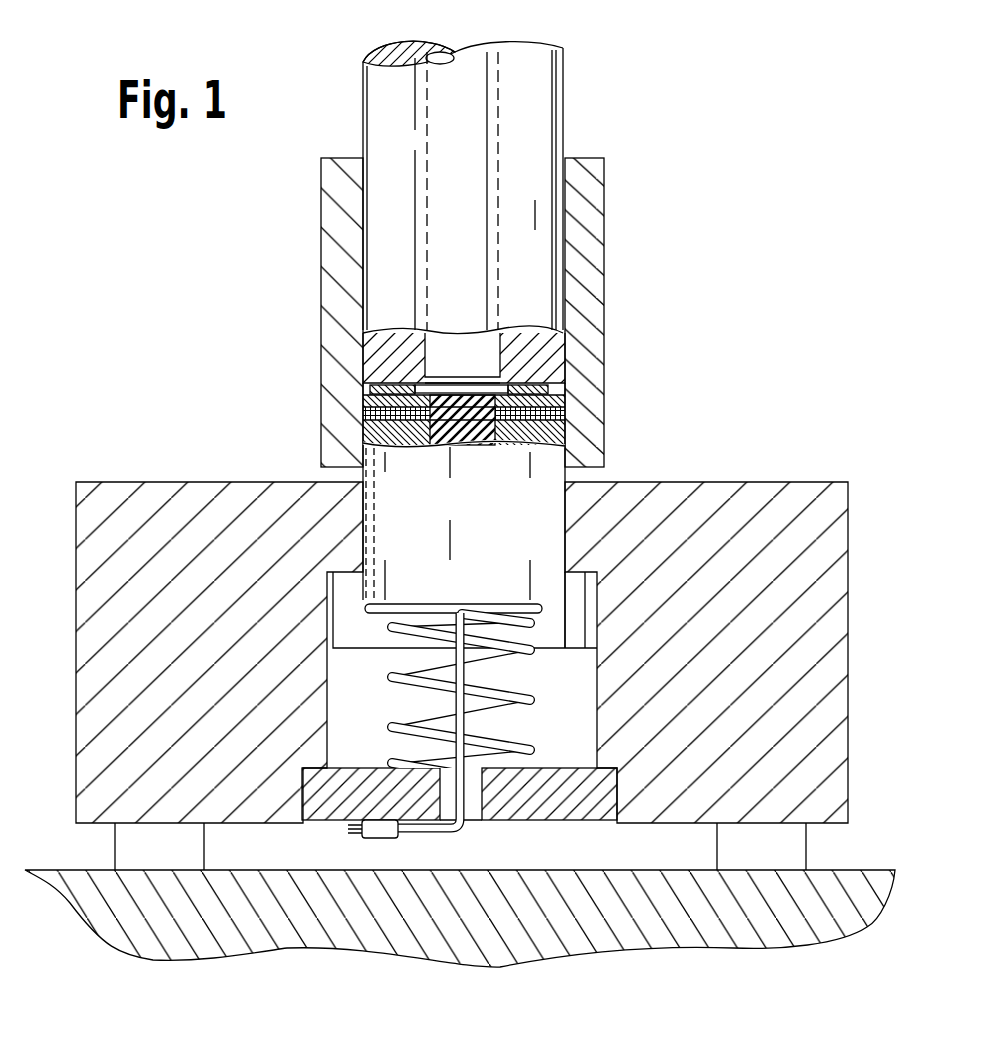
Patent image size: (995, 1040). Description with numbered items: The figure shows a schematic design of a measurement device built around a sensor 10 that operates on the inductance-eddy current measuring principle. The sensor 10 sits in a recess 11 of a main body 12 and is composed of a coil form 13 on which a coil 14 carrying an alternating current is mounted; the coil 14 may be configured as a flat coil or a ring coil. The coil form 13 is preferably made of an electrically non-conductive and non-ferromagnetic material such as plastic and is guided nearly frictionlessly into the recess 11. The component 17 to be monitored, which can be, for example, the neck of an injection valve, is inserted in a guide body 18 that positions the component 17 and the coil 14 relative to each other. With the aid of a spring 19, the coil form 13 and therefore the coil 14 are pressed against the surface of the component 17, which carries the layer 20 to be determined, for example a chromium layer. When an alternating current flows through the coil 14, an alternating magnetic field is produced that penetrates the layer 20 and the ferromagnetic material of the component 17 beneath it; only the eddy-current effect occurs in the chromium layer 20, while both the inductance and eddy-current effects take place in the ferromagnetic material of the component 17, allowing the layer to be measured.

The sensor 10 is at (266, 430).
The recess 11 is at (565, 740).
The main body 12 is at (756, 540).
The coil form 13 is at (545, 485).
The coil 14 is at (548, 412).
The component 17 is at (523, 101).
The guide body 18 is at (592, 193).
The spring 19 is at (400, 720).
The layer 20 is at (553, 360).